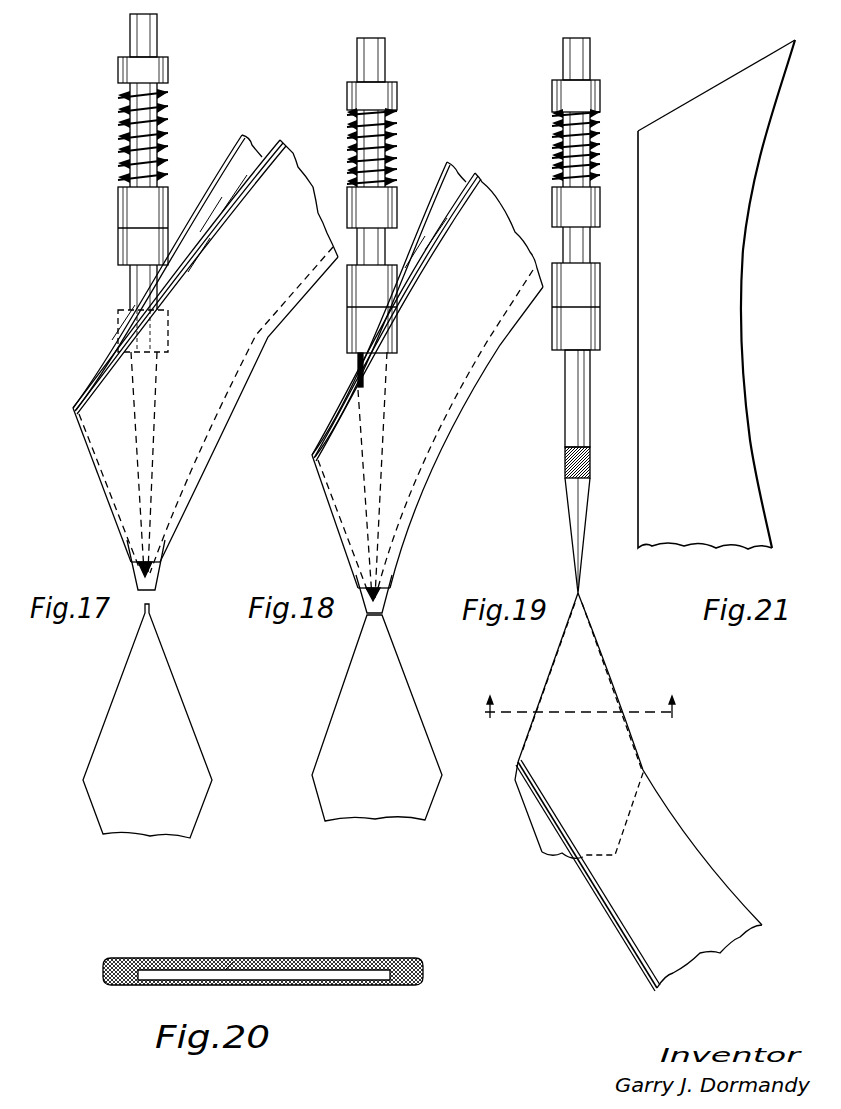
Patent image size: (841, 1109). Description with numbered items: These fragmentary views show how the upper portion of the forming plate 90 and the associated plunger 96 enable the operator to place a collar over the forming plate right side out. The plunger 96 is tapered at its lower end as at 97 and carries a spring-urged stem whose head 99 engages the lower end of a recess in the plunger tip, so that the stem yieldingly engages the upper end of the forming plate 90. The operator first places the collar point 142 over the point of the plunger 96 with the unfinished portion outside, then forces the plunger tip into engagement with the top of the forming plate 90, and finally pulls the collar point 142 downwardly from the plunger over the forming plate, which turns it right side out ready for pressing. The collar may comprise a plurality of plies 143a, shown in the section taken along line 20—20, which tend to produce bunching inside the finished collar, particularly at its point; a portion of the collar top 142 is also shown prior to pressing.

In FIG. 17, the forming plate 90 is at (140, 638).
In FIG. 18, the forming plate 90 is at (372, 630).
In FIG. 19, the forming plate 90 is at (585, 650).
In FIG. 17, the plunger 96 is at (130, 285).
In FIG. 18, the plunger 96 is at (358, 365).
In FIG. 19, the plunger 96 is at (573, 410).
In FIG. 19, the tapered lower end 97 is at (570, 520).
In FIG. 17, the head 99 is at (140, 576).
In FIG. 18, the head 99 is at (368, 594).
In FIG. 17, the collar point 142 is at (122, 541).
In FIG. 18, the collar point 142 is at (352, 560).
In FIG. 19, the collar point 142 is at (595, 671).
In FIG. 21, the collar point 142 is at (753, 77).
In FIG. 20, the plies 143a is at (298, 958).
In FIG. 19, the section line 20- 20 is at (576, 717).